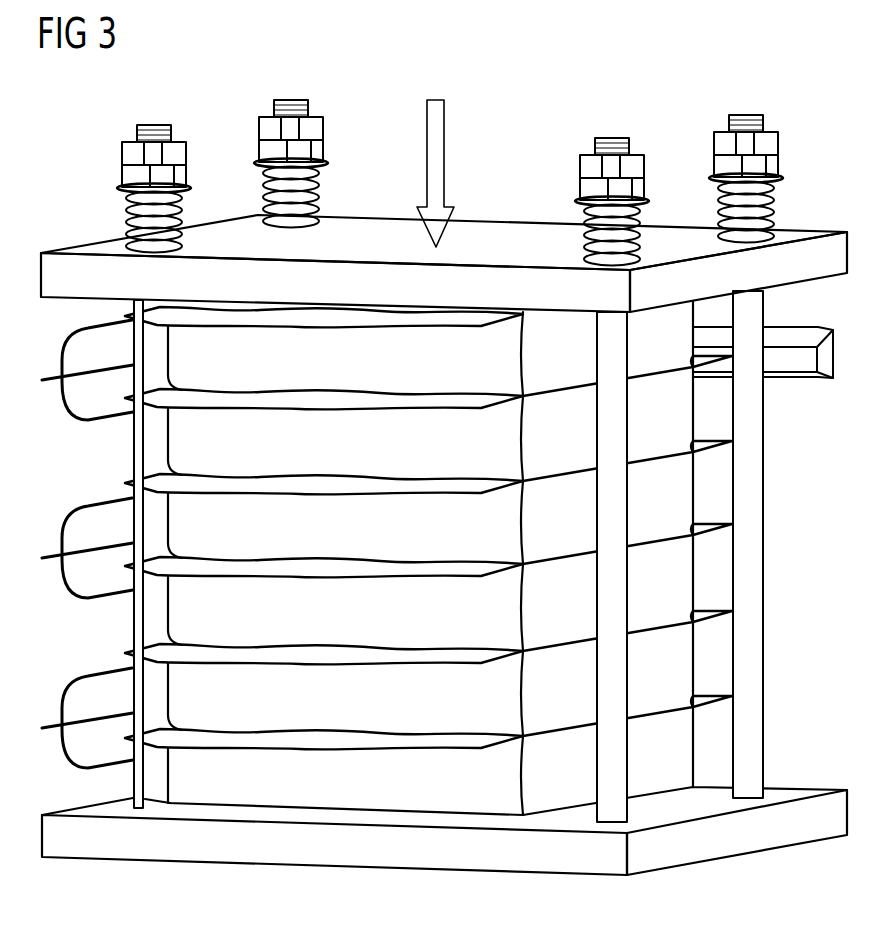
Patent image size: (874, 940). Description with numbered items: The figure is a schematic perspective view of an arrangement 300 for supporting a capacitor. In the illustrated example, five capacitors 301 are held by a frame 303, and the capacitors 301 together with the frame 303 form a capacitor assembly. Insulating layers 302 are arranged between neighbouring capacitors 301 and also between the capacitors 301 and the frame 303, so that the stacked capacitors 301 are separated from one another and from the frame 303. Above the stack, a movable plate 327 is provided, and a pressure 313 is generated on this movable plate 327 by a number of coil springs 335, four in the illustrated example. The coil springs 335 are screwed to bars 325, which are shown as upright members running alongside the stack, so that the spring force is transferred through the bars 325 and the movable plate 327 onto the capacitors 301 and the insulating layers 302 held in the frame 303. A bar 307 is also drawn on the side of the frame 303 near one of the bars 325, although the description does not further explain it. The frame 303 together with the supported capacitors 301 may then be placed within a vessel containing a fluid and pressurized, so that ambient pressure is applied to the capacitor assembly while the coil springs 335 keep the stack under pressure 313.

The arrangement for supporting a capacitor 300 is at (581, 83).
The capacitor 301 is at (185, 428).
The insulating layer 302 is at (392, 332).
The frame 303 is at (807, 250).
The cross bar 307 is at (806, 342).
The pressure 313 is at (437, 143).
The bar 325 is at (145, 778).
The movable plate 327 is at (100, 287).
The coil spring 335 is at (184, 214).